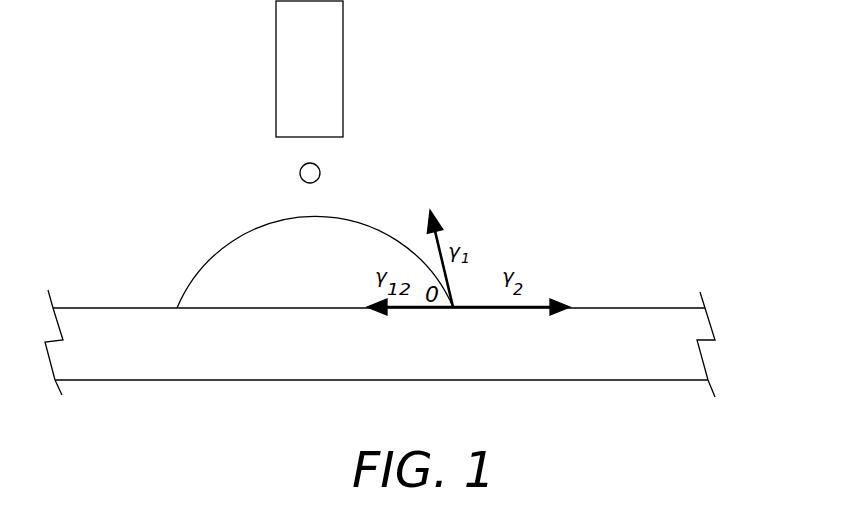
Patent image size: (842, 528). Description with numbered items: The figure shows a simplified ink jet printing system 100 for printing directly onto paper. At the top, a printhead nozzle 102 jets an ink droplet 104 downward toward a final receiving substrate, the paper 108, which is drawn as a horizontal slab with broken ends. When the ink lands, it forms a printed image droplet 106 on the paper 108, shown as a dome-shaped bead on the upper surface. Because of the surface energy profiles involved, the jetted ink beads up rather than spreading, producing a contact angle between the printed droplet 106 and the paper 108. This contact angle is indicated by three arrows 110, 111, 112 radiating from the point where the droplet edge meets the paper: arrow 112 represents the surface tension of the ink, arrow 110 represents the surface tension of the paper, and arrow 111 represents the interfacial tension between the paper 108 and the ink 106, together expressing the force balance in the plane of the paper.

The ink jet printing system 100 is at (531, 119).
The printhead nozzle 102 is at (343, 30).
The ink droplet 104 is at (300, 170).
The printed image droplet 106 is at (225, 248).
The paper 108 is at (590, 380).
The arrow 110 is at (537, 302).
The arrow 111 is at (418, 310).
The arrow 112 is at (450, 287).